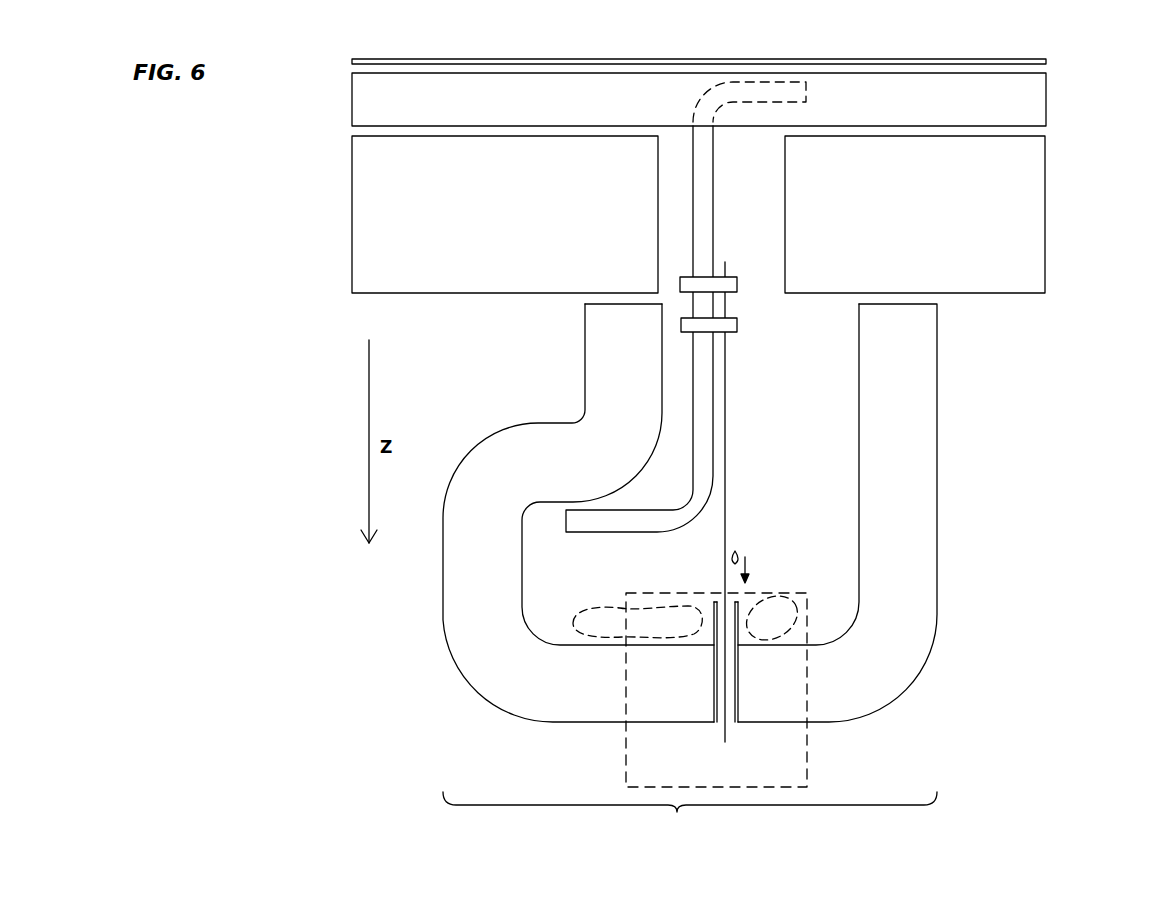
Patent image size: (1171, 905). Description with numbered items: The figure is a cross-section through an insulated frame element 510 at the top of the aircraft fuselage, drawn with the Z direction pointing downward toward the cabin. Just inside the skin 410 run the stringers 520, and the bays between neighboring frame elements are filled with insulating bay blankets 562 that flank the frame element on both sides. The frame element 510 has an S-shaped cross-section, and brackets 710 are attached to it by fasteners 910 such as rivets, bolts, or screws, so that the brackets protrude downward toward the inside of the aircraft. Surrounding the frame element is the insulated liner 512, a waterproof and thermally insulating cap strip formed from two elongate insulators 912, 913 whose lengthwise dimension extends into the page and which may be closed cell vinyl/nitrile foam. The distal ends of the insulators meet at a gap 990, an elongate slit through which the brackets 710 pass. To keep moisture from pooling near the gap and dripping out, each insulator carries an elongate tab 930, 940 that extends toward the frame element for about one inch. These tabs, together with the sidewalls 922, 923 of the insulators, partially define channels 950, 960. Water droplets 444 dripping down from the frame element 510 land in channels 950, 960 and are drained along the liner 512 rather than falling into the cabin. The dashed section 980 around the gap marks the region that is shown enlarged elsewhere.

The skin 410 is at (352, 62).
The stringer 520 is at (352, 110).
The insulating bay blanket 562 is at (443, 297).
The frame element 510 is at (713, 167).
The bracket 710 is at (725, 441).
The water droplet 444 is at (737, 556).
The fastener 910 is at (737, 285).
The insulator 912 is at (446, 657).
The sidewall 922 is at (538, 570).
The insulator 913 is at (926, 480).
The sidewall 923 is at (820, 566).
The tab 930 is at (712, 600).
The tab 940 is at (741, 606).
The channel 950 is at (602, 605).
The channel 960 is at (797, 620).
The section 980 is at (626, 742).
The gap 990 is at (708, 733).
The insulated liner 512 is at (690, 811).